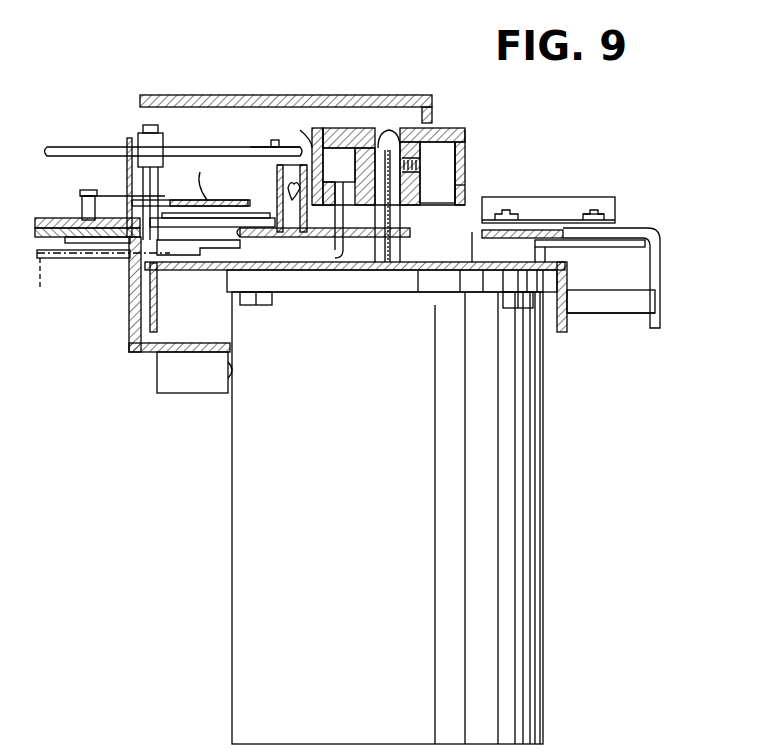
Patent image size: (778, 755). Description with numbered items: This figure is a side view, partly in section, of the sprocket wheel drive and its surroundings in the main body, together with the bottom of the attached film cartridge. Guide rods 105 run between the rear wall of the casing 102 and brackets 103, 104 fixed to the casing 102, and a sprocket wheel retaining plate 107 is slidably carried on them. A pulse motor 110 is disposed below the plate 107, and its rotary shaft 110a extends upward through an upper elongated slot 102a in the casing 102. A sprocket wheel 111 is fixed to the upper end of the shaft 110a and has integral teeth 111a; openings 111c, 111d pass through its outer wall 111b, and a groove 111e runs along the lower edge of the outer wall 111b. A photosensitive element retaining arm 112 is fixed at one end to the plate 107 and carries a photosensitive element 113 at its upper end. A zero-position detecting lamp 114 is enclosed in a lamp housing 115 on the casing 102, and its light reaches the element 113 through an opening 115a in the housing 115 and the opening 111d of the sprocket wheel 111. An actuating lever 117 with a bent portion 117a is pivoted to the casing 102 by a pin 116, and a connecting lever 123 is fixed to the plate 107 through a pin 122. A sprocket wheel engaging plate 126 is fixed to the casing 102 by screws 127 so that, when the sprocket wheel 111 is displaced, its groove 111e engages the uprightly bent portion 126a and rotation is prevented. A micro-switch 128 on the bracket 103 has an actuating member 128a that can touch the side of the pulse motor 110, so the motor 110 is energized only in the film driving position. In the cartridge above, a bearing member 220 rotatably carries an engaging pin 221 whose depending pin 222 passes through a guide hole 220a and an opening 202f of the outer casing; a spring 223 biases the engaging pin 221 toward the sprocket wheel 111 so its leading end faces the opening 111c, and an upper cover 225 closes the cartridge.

The upper cover 225 is at (248, 95).
The engaging pin 221 is at (70, 147).
The depending pin 222 is at (140, 133).
The spring 223 is at (114, 196).
The bearing member 220 is at (272, 147).
The guide hole 220a is at (194, 179).
The opening 115a is at (296, 129).
The lamp housing 115 is at (262, 196).
The bent portion 117a is at (207, 215).
The actuating lever 117 is at (130, 256).
The zero-position detecting lamp 114 is at (278, 186).
The sprocket wheel 111 is at (446, 128).
The teeth 111a is at (465, 135).
The outer wall 111b is at (465, 158).
The opening 111c is at (336, 112).
The opening 111d is at (332, 182).
The groove 111e is at (465, 200).
The rotary shaft 110a is at (405, 128).
The photosensitive element 113 is at (345, 192).
The photosensitive element retaining arm 112 is at (340, 268).
The pulse motor 110 is at (418, 270).
The connecting lever 123 is at (45, 285).
The pin 122 is at (140, 255).
The pin 116 is at (188, 258).
The bracket 103 is at (129, 350).
The micro-switch 128 is at (187, 393).
The actuating member 128a is at (232, 374).
The opening 202f is at (355, 278).
The upper elongated slot 102a is at (482, 236).
The casing 102 is at (635, 238).
The bracket 104 is at (592, 245).
The sprocket wheel retaining plate 107 is at (567, 272).
The guide rod 105 is at (592, 313).
The sprocket wheel engaging plate 126 is at (615, 205).
The uprightly bent portion 126a is at (590, 210).
The screws 127 is at (590, 210).